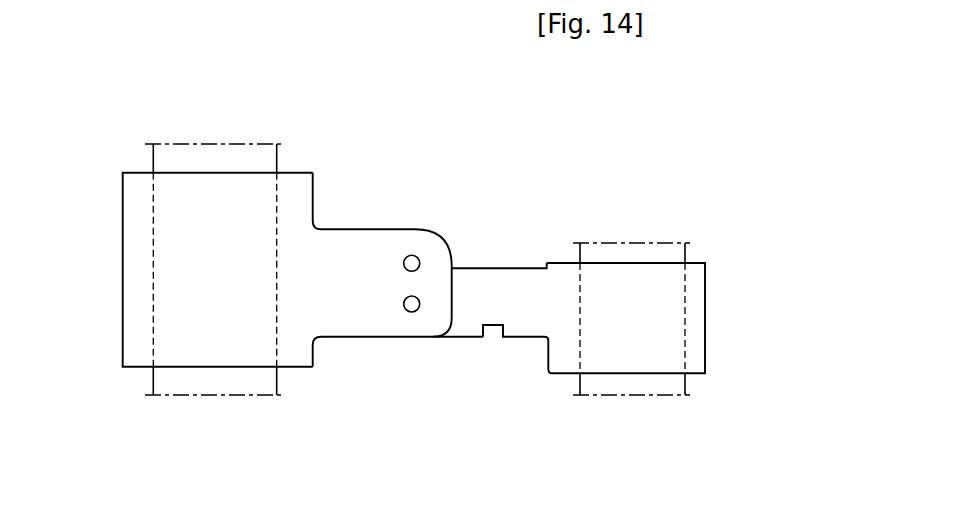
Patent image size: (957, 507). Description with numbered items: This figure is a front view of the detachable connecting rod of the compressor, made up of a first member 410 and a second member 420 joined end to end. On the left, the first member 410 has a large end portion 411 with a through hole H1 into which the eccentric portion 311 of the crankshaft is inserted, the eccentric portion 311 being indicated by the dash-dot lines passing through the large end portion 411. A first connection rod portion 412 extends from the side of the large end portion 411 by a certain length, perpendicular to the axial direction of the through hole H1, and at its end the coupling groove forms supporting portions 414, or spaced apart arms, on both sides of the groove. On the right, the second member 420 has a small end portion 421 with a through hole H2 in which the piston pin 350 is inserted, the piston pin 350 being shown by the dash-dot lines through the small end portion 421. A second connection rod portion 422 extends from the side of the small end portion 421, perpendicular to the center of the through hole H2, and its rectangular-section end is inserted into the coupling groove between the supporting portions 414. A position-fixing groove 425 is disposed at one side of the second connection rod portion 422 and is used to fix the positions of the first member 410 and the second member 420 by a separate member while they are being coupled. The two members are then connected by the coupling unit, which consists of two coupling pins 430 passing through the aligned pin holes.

The first member 410 is at (131, 168).
The large end portion 411 is at (137, 245).
The eccentric portion 311 is at (267, 162).
The first connection rod portion 412 is at (337, 298).
The supporting portions 414 is at (442, 270).
The coupling pins 430 is at (415, 256).
The second member 420 is at (697, 258).
The small end portion 421 is at (698, 305).
The second connection rod portion 422 is at (469, 312).
The position-fixing groove 425 is at (492, 330).
The piston pin 350 is at (608, 383).
The through hole H1 is at (277, 347).
The through hole H2 is at (685, 352).